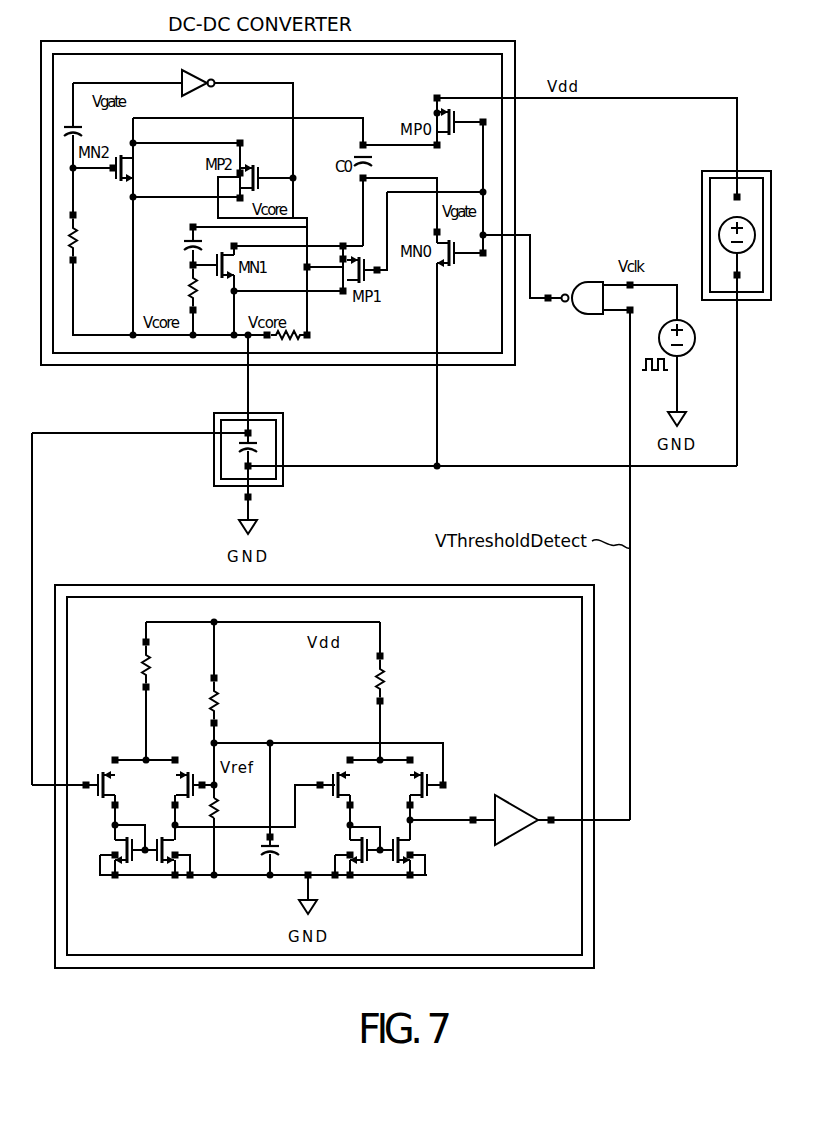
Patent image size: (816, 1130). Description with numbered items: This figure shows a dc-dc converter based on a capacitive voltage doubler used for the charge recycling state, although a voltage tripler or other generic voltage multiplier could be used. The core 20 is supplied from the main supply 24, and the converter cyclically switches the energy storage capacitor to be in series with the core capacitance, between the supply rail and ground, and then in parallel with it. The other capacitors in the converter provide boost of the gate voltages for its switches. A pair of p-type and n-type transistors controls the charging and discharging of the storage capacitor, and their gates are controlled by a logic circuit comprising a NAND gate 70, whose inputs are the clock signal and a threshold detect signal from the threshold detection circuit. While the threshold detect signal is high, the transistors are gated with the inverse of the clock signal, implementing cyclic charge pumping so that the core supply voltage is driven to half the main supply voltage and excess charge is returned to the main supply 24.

The core 20 is at (290, 445).
The main supply 24 is at (697, 210).
The NAND gate 70 is at (588, 275).